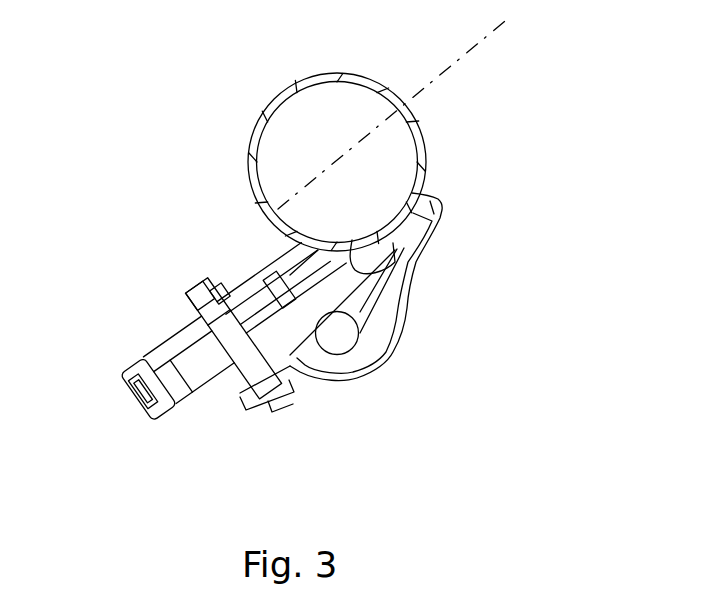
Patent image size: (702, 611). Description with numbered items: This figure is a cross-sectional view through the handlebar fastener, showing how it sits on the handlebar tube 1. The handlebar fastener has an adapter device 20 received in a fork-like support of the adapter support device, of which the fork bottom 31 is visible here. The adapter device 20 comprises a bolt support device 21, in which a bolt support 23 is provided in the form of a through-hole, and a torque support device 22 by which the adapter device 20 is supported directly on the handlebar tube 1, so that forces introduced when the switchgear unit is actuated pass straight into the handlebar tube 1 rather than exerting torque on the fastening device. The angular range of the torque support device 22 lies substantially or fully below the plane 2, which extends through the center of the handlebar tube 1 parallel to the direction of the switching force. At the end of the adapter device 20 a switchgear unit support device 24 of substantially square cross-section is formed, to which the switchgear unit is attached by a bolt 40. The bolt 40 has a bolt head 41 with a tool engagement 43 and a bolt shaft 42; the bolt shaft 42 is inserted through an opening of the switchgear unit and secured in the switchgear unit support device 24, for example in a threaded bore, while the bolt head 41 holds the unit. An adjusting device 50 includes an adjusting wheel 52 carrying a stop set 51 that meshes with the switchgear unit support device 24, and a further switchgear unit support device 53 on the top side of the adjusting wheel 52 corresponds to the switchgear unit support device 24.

The handlebar tube 1 is at (427, 150).
The plane through the center of the handlebar tube 2 is at (420, 90).
The adapter device 20 is at (367, 327).
The bolt support device 21 is at (343, 370).
The torque support device 22 is at (352, 278).
The bolt support 23 is at (355, 352).
The switchgear unit support device 24 is at (290, 380).
The fork bottom 31 is at (410, 230).
The bolt 40 is at (187, 355).
The bolt head 41 is at (128, 375).
The bolt shaft 42 is at (190, 385).
The tool engagement 43 is at (128, 407).
The adjusting device 50 is at (283, 405).
The stop set 51 is at (223, 293).
The adjusting wheel 52 is at (192, 288).
The switchgear unit support device 53 is at (182, 324).